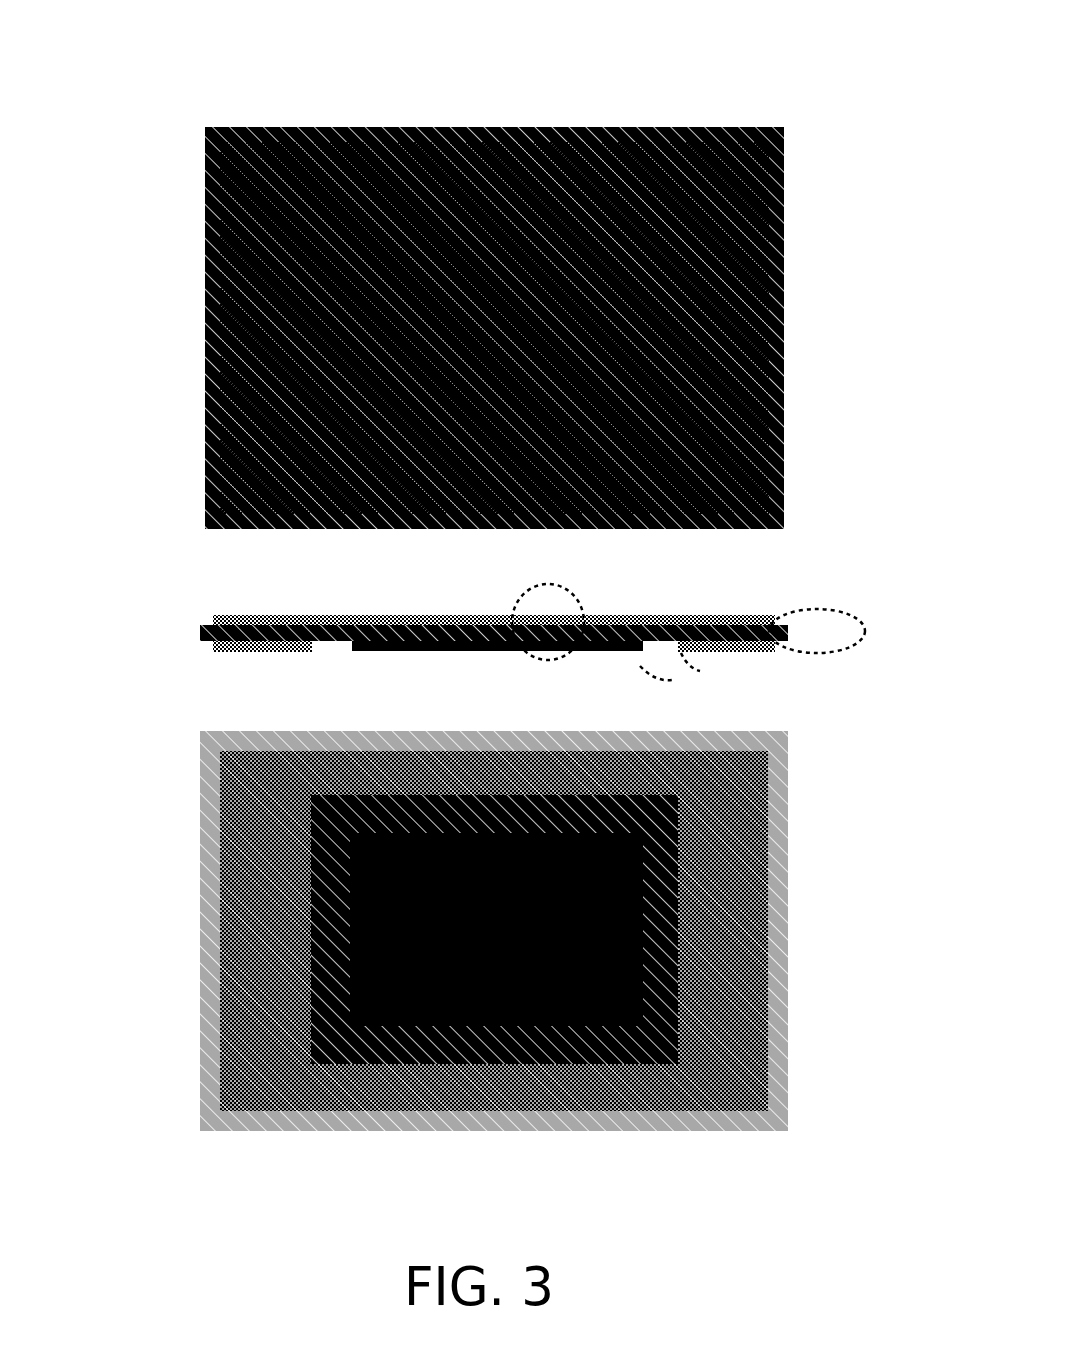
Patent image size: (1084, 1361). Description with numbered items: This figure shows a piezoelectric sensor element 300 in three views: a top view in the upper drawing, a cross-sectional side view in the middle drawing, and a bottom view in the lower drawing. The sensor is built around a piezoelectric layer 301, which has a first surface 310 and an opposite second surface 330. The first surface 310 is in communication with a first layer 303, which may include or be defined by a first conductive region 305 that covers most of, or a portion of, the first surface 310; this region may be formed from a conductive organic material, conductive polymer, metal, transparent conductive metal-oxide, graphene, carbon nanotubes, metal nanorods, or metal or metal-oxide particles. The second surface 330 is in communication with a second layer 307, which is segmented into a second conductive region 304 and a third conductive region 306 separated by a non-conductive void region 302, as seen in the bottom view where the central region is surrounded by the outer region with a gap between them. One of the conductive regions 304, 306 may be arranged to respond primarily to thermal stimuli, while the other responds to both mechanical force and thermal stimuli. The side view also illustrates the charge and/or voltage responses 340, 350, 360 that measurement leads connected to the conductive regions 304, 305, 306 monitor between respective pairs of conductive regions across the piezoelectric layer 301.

The piezoelectric sensor element 300 is at (481, 70).
The piezoelectric layer 301 is at (206, 249).
The non-conductive void region 302 is at (384, 800).
The first layer 303 is at (280, 462).
The second conductive region 304 is at (469, 827).
The first conductive region 305 is at (433, 383).
The third conductive region 306 is at (243, 653).
The second layer 307 is at (188, 662).
The first surface 310 is at (742, 300).
The second surface 330 is at (740, 810).
The charge and/or voltage response 340 is at (862, 627).
The charge and/or voltage response 350 is at (581, 582).
The charge and/or voltage response 360 is at (687, 677).